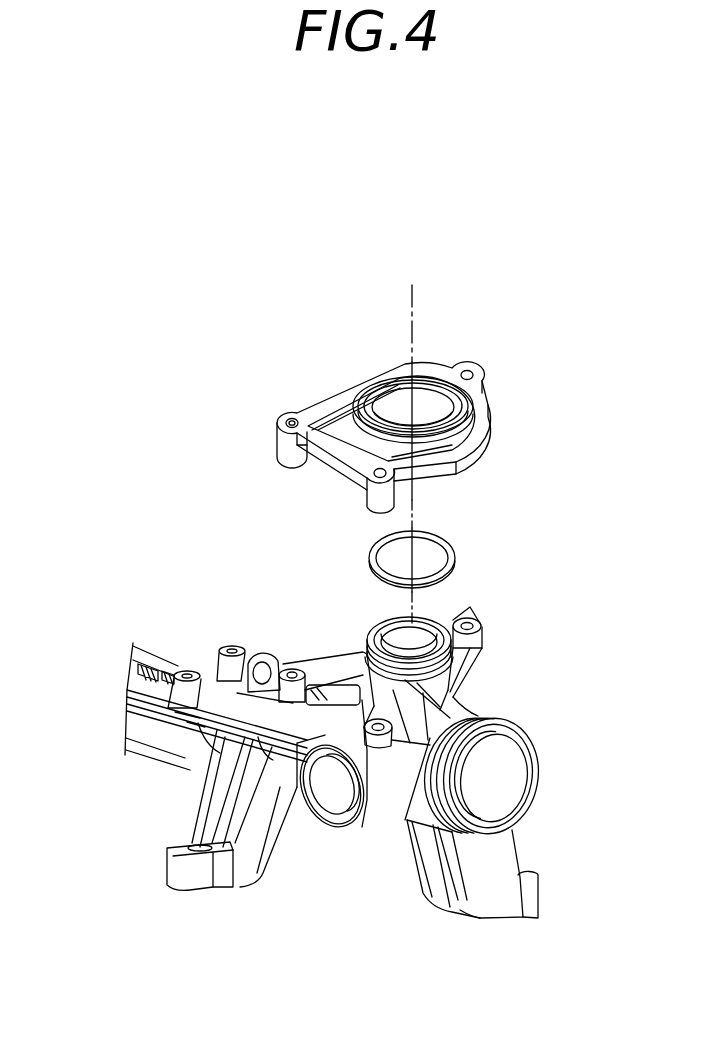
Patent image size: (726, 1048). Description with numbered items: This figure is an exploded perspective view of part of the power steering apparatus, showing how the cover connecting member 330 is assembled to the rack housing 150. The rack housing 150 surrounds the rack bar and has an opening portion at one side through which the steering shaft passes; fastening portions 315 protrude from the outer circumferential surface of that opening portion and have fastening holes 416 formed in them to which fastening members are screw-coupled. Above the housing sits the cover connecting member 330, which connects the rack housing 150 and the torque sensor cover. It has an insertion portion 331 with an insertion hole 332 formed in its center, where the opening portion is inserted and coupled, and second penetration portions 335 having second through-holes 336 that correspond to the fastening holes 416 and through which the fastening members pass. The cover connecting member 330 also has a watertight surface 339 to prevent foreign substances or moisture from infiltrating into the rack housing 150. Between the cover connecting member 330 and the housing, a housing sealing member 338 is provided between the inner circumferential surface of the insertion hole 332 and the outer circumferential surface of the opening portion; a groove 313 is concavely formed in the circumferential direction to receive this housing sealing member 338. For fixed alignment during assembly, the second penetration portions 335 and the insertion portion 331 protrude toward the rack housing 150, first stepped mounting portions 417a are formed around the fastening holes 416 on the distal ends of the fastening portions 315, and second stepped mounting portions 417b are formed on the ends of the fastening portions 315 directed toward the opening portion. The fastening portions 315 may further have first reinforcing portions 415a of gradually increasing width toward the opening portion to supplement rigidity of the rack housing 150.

The rack housing 150 is at (388, 735).
The groove 313 is at (455, 648).
The fastening portions 315 is at (362, 656).
The cover connecting member 330 is at (398, 385).
The insertion portion 331 is at (356, 394).
The insertion hole 332 is at (404, 413).
The second penetration portions 335 is at (284, 446).
The second through-holes 336 is at (290, 420).
The housing sealing member 338 is at (470, 561).
The watertight surface 339 is at (343, 420).
The first reinforcing portions 415a is at (466, 768).
The fastening holes 416 is at (472, 606).
The first stepped mounting portions 417a is at (259, 655).
The second stepped mounting portions 417b is at (369, 698).